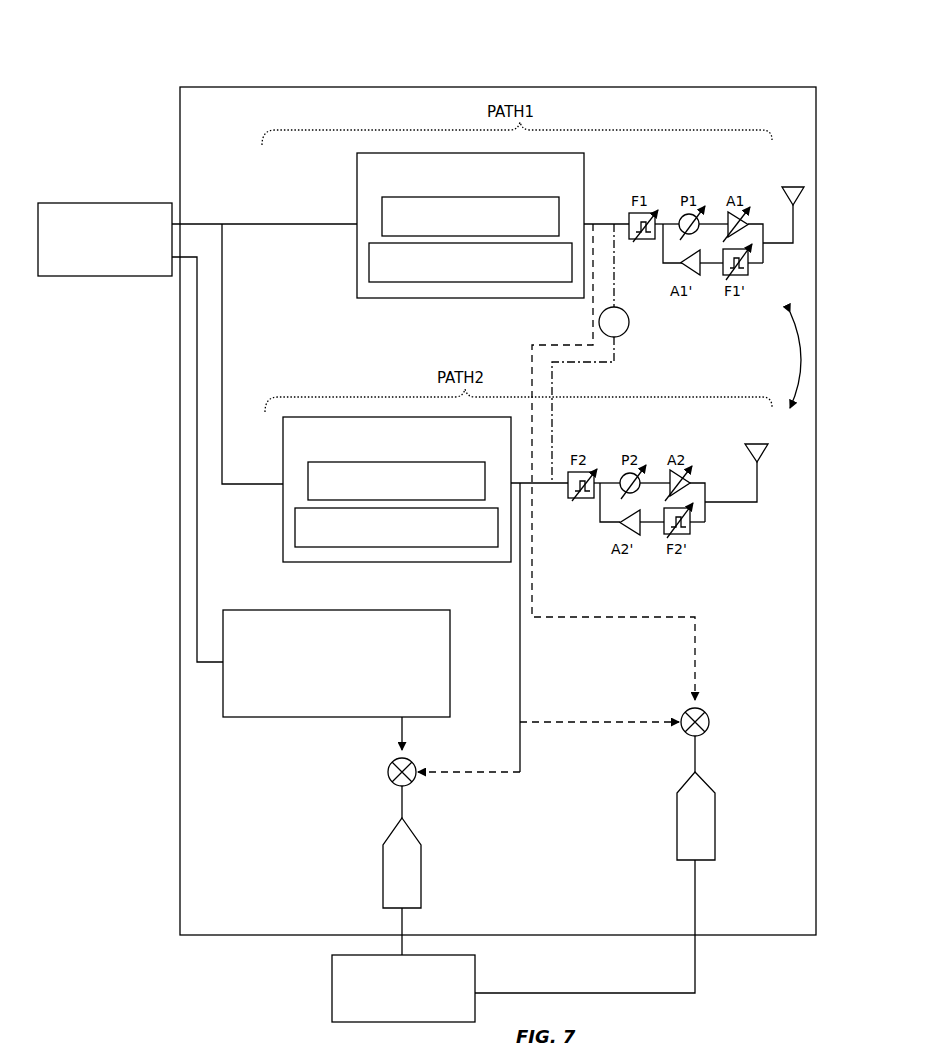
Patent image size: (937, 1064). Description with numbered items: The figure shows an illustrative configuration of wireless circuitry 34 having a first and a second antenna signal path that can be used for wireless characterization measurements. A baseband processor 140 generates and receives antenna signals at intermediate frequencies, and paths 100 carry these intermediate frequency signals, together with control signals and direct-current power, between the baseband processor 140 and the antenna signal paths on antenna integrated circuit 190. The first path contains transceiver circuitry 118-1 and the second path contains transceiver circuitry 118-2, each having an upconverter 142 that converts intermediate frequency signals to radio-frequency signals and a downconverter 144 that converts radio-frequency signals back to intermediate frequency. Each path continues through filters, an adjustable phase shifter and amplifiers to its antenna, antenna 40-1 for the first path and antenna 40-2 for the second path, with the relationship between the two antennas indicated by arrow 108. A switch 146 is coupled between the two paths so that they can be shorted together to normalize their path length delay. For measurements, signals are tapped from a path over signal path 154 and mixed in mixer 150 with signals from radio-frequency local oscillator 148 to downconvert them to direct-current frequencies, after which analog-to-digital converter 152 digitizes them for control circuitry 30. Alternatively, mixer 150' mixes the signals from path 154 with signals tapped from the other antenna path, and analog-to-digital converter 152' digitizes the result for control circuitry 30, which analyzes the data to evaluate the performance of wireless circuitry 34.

The wireless circuitry 34 is at (498, 473).
The antenna integrated circuit 190 is at (625, 87).
The baseband processor 140 is at (93, 203).
The paths 100 is at (268, 228).
The transceiver circuitry 118-1 is at (357, 160).
The transceiver circuitry 118-2 is at (283, 440).
The upconverter 142 is at (382, 222).
The downconverter 144 is at (369, 268).
The switch 146 is at (631, 331).
The antenna spacing / coupling 108 is at (790, 358).
The antenna 40-1 is at (784, 258).
The antenna 40-2 is at (762, 512).
The signal path 154 is at (520, 672).
The radio-frequency local oscillator 148 is at (275, 717).
The mixer 150 is at (364, 776).
The mixer 150' is at (728, 706).
The analog-to-digital converter 152 is at (375, 863).
The analog-to-digital converter 152' is at (666, 816).
The control circuitry 30 is at (332, 983).